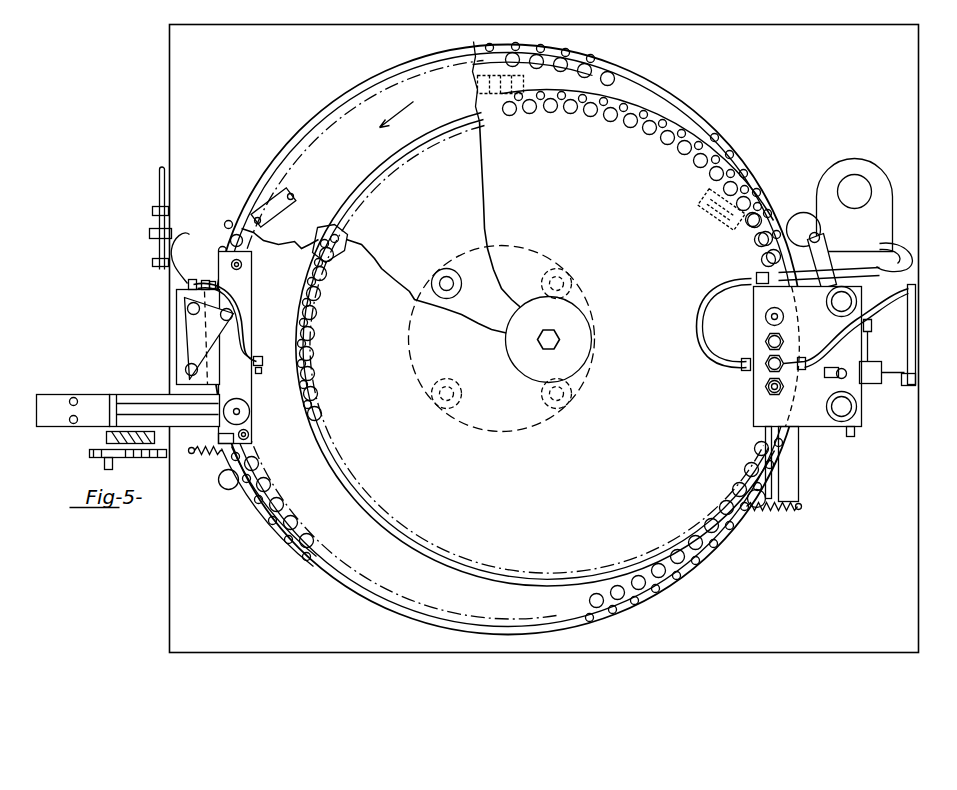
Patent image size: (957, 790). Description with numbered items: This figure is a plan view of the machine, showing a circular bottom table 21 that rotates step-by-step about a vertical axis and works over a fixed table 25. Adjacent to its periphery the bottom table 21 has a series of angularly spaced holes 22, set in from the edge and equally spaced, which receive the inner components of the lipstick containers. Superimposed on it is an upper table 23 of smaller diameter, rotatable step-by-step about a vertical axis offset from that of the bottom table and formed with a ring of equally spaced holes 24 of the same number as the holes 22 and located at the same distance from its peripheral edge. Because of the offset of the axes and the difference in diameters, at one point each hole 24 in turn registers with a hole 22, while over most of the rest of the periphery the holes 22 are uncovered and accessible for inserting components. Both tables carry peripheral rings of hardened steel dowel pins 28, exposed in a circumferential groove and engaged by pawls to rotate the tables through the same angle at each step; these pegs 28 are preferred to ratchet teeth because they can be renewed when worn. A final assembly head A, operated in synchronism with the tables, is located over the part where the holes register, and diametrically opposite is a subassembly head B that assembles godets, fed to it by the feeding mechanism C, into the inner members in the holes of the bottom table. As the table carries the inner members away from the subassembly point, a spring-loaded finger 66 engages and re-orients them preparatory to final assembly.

The circular bottom table 21 is at (354, 554).
The holes 22 is at (662, 572).
The upper table 23 is at (360, 461).
The holes 24 is at (624, 118).
The fixed table 25 is at (330, 633).
The dowel pins 28 is at (576, 51).
The spring-loaded finger 66 is at (242, 496).
The final assembly head A is at (862, 420).
The subassembly head B is at (165, 337).
The feeding mechanism C is at (91, 388).